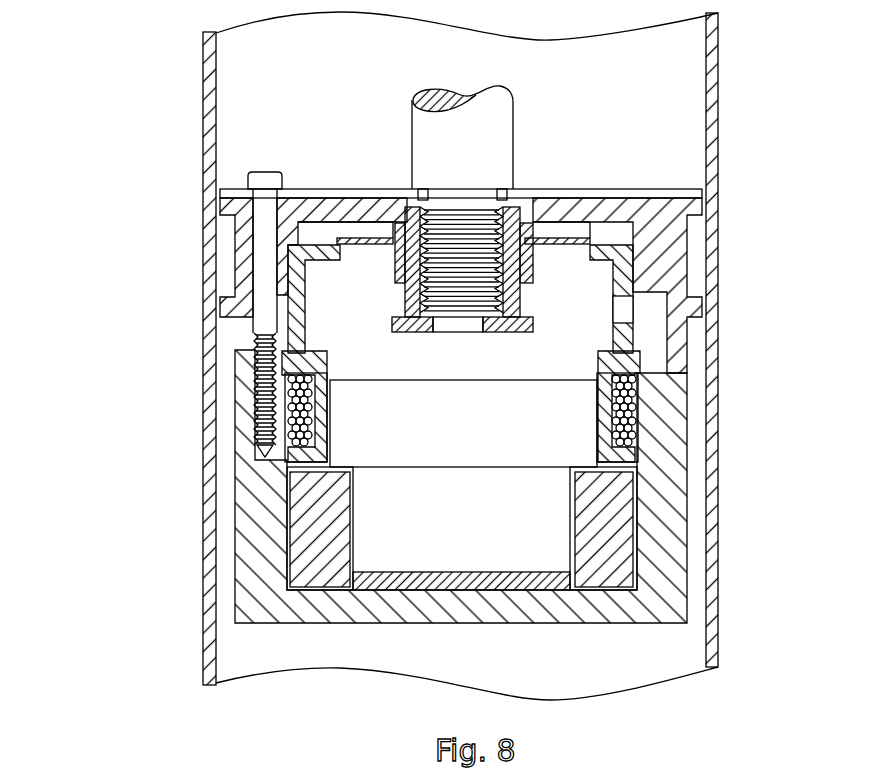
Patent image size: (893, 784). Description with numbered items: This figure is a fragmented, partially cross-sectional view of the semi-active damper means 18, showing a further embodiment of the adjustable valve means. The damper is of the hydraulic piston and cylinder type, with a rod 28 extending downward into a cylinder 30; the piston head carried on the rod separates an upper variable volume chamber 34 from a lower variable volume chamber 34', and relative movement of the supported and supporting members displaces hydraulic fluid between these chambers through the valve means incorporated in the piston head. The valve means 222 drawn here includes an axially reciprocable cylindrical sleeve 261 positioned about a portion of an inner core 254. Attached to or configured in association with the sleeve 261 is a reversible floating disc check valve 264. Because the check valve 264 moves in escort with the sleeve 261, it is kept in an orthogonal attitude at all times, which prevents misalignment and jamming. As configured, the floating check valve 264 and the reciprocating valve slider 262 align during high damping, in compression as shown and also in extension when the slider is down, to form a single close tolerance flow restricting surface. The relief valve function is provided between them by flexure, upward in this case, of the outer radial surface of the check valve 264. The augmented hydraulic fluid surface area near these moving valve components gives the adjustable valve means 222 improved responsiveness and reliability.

The semi-active damper means 18 is at (180, 142).
The cylinder 30 is at (718, 68).
The variable volume chamber 34 is at (467, 44).
The variable volume chamber 34' is at (467, 668).
The rod 28 is at (477, 156).
The reversible floating disc check valve 264 is at (655, 194).
The cylindrical sleeve 261 is at (540, 222).
The reciprocating valve slider 262 is at (637, 280).
The inner core 254 is at (403, 326).
The adjustable valve means 222 is at (233, 488).